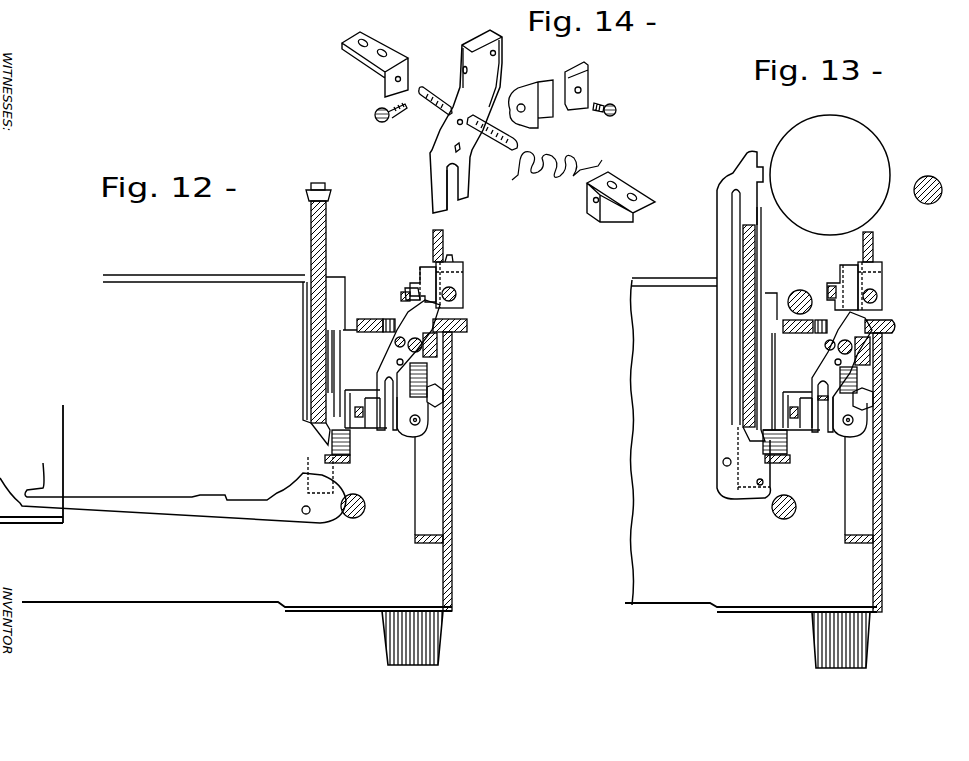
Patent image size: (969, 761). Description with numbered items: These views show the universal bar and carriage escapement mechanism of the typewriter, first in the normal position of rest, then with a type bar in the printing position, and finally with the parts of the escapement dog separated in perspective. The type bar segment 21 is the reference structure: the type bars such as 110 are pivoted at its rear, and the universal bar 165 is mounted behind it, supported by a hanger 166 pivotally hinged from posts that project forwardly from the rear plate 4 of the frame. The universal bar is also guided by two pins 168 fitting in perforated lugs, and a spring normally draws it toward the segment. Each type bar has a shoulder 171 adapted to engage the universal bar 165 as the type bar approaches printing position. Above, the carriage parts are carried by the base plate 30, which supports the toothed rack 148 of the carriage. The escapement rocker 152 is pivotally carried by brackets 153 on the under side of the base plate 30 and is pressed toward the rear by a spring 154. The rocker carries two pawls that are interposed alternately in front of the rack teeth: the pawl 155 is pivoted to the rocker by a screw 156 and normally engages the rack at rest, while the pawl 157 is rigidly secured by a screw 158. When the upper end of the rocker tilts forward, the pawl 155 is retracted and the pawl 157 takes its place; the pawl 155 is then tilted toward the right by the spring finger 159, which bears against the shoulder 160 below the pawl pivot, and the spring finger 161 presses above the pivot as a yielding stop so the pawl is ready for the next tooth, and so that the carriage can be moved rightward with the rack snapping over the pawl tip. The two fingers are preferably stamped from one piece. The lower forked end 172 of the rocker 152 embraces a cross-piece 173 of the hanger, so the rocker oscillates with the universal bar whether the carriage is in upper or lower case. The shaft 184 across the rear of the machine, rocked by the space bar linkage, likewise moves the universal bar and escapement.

In FIG. 12, the rear plate 4 is at (452, 571).
In FIG. 13, the rear plate 4 is at (882, 574).
In FIG. 12, the type bar segment 21 is at (311, 268).
In FIG. 13, the type bar segment 21 is at (745, 260).
In FIG. 12, the base plate 30 is at (467, 326).
In FIG. 13, the base plate 30 is at (897, 328).
In FIG. 12, the type bar 110 is at (157, 500).
In FIG. 13, the type bar 110 is at (717, 326).
In FIG. 12, the toothed rack 148 is at (445, 250).
In FIG. 13, the toothed rack 148 is at (875, 250).
In FIG. 12, the escapement rocker 152 is at (390, 375).
In FIG. 14, the escapement rocker 152 is at (443, 157).
In FIG. 13, the escapement rocker 152 is at (822, 378).
In FIG. 14, the brackets 153 is at (345, 45).
In FIG. 12, the spring 154 is at (425, 378).
In FIG. 14, the spring 154 is at (554, 175).
In FIG. 13, the spring 154 is at (862, 370).
In FIG. 12, the pawl 155 is at (425, 275).
In FIG. 14, the pawl 155 is at (545, 92).
In FIG. 13, the pawl 155 is at (847, 280).
In FIG. 12, the screw 156 is at (403, 299).
In FIG. 14, the screw 156 is at (374, 115).
In FIG. 13, the screw 156 is at (828, 291).
In FIG. 12, the pawl 157 is at (465, 275).
In FIG. 14, the pawl 157 is at (585, 73).
In FIG. 13, the pawl 157 is at (882, 275).
In FIG. 12, the screw 158 is at (457, 296).
In FIG. 14, the screw 158 is at (617, 110).
In FIG. 13, the screw 158 is at (878, 298).
In FIG. 12, the spring finger 159 is at (408, 290).
In FIG. 14, the shoulder 160 is at (540, 125).
In FIG. 12, the spring finger 161 is at (462, 268).
In FIG. 12, the universal bar 165 is at (343, 465).
In FIG. 13, the universal bar 165 is at (784, 468).
In FIG. 12, the hanger 166 is at (440, 396).
In FIG. 13, the hanger 166 is at (852, 390).
In FIG. 12, the pins 168 is at (357, 413).
In FIG. 13, the pins 168 is at (795, 420).
In FIG. 12, the shoulder 171 is at (305, 472).
In FIG. 13, the shoulder 171 is at (760, 480).
In FIG. 12, the lower forked end 172 is at (440, 423).
In FIG. 14, the lower forked end 172 is at (446, 190).
In FIG. 13, the lower forked end 172 is at (860, 430).
In FIG. 12, the cross-piece 173 is at (397, 428).
In FIG. 13, the cross-piece 173 is at (835, 432).
In FIG. 12, the shaft 184 is at (354, 519).
In FIG. 13, the shaft 184 is at (784, 520).